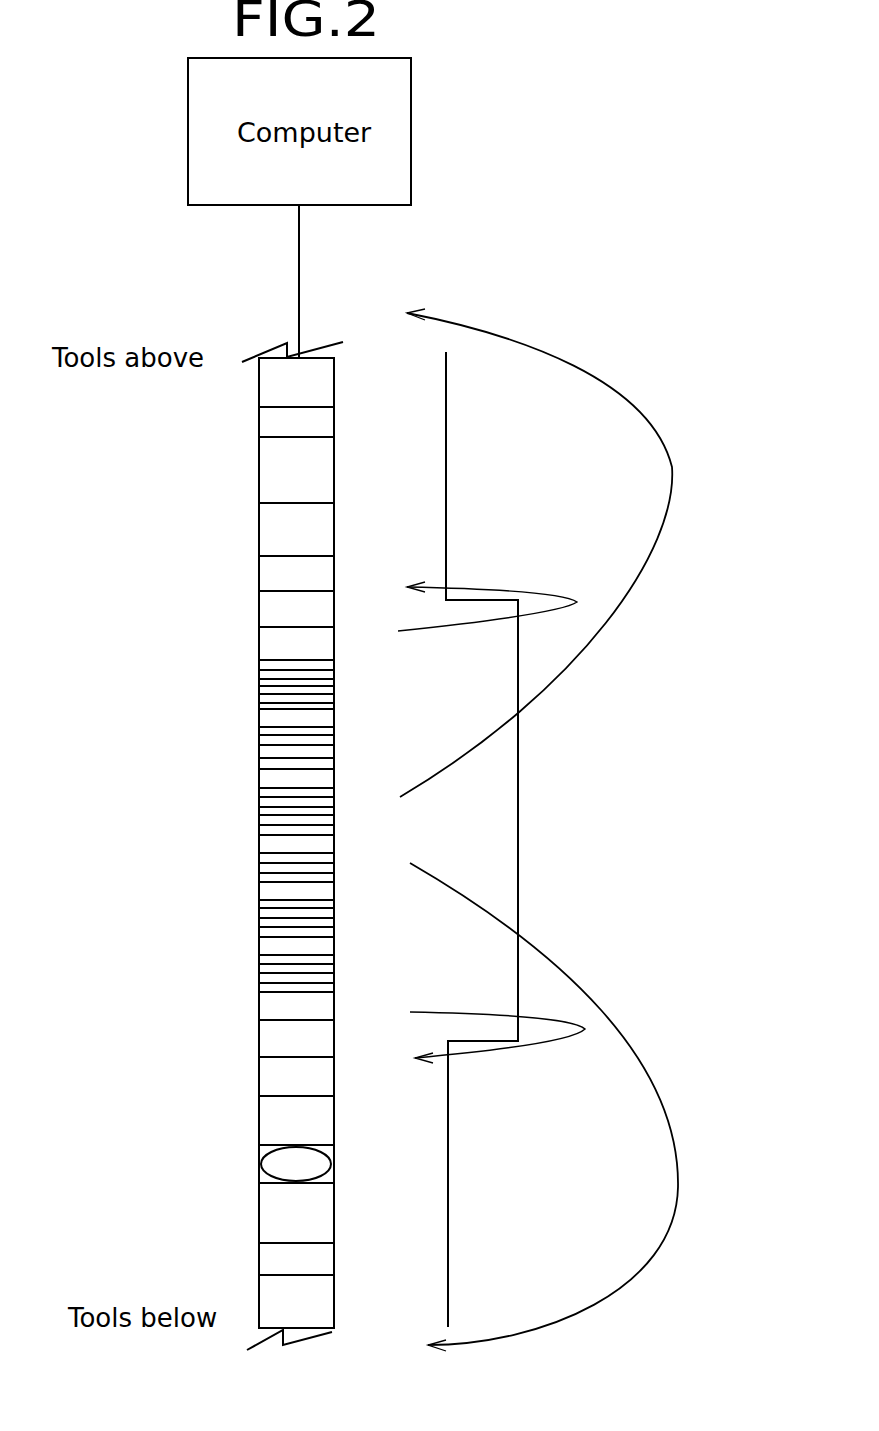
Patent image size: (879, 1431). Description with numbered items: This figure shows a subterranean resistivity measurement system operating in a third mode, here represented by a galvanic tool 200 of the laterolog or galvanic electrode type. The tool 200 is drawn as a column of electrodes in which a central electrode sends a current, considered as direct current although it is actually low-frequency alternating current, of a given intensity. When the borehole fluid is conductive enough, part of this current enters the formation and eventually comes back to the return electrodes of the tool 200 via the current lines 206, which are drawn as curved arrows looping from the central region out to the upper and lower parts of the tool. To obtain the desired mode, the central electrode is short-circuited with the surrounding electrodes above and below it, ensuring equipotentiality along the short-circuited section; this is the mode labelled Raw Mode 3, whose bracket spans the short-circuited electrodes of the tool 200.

The galvanic tool 200 is at (173, 605).
The current lines 206 is at (627, 378).
The raw mode 3 acquisition window 3 is at (576, 839).